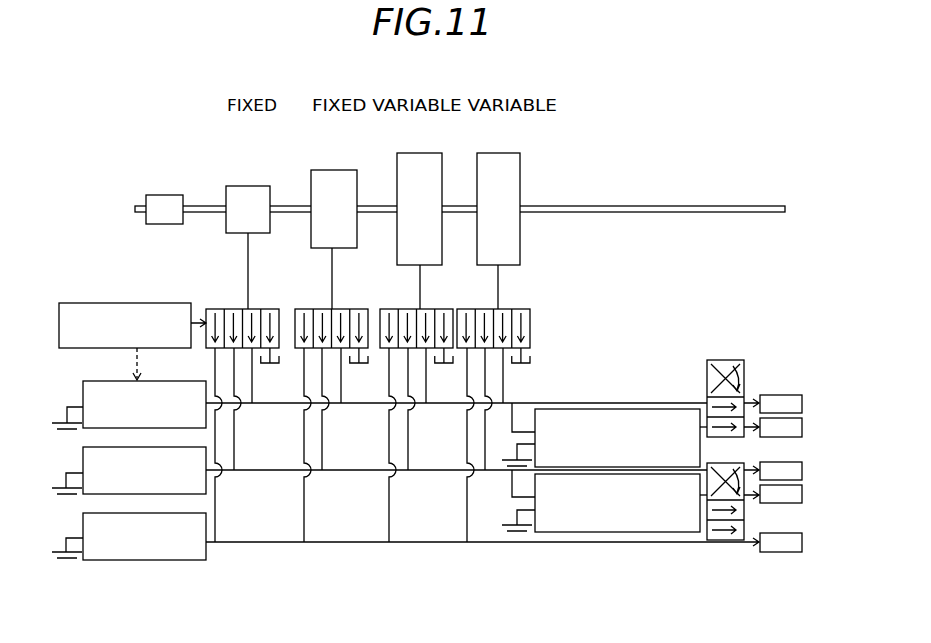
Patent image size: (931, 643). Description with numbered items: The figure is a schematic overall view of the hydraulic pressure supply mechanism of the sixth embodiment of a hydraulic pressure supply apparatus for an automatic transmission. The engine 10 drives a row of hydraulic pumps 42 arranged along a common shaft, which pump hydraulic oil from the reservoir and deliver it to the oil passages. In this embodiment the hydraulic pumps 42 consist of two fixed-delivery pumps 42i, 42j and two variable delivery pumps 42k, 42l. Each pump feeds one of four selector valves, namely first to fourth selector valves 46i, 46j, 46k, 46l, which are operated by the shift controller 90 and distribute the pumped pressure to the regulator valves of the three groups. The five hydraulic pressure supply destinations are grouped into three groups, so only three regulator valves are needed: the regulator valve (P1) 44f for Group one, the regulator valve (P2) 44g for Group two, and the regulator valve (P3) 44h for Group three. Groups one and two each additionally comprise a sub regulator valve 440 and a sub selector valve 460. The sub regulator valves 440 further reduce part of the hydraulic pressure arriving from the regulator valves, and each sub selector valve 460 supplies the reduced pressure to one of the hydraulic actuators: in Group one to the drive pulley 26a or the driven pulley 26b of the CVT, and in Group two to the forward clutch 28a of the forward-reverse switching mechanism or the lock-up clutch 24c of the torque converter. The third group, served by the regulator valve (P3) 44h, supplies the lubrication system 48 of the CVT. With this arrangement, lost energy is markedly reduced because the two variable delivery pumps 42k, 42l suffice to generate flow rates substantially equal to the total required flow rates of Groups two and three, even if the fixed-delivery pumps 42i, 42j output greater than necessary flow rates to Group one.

The engine 10 is at (163, 193).
The hydraulic pumps 42 is at (222, 141).
The fixed-delivery pump 42i is at (263, 186).
The fixed-delivery pump 42j is at (350, 170).
The variable delivery pump 42k is at (439, 153).
The variable delivery pump 42l is at (517, 153).
The first selector valve 46i is at (264, 309).
The second selector valve 46j is at (343, 309).
The third selector valve 46k is at (444, 309).
The fourth selector valve 46l is at (524, 309).
The shift controller 90 is at (168, 303).
The regulator valve (P1) 44f is at (83, 396).
The regulator valve (P2) 44g is at (83, 459).
The regulator valve (P3) 44h is at (83, 521).
The sub regulator valve 440 is at (607, 409).
The sub selector valve 460 is at (706, 380).
The drive pulley 26a is at (767, 394).
The driven pulley 26b is at (805, 418).
The forward clutch 28a is at (799, 462).
The lock-up clutch 24c is at (767, 503).
The lubrication system 48 is at (773, 552).